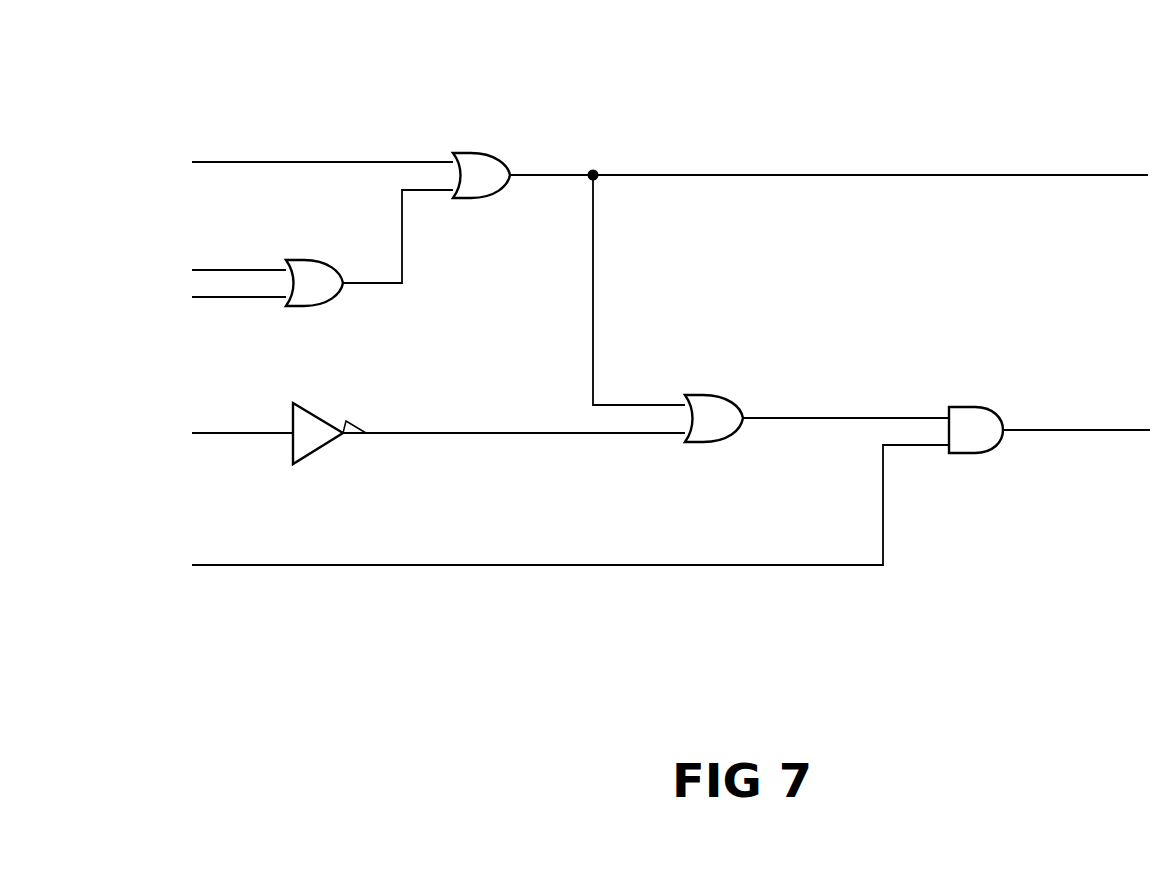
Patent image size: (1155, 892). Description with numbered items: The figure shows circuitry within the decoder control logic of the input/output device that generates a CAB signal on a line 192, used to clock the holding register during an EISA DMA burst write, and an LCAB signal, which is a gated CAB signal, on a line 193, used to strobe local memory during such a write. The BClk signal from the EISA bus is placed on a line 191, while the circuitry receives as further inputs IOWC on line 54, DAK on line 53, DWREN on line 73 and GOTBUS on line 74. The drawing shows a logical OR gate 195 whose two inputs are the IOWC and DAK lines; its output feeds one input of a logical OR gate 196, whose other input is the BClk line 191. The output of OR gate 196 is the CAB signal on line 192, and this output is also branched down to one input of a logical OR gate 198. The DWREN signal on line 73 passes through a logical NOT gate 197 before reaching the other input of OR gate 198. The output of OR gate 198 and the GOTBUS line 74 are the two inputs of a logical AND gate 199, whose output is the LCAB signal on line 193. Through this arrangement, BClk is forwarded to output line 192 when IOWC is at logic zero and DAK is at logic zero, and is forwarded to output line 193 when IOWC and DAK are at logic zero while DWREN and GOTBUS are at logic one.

The line 191 is at (262, 162).
The line 192 is at (1032, 175).
The line 193 is at (1043, 430).
The line 54 is at (230, 270).
The line 53 is at (230, 297).
The logical OR gate 195 is at (325, 306).
The logical OR gate 196 is at (499, 155).
The logical NOT gate 197 is at (315, 450).
The logical OR gate 198 is at (718, 396).
The logical AND gate 199 is at (978, 453).
The line 73 is at (215, 433).
The line 74 is at (262, 565).